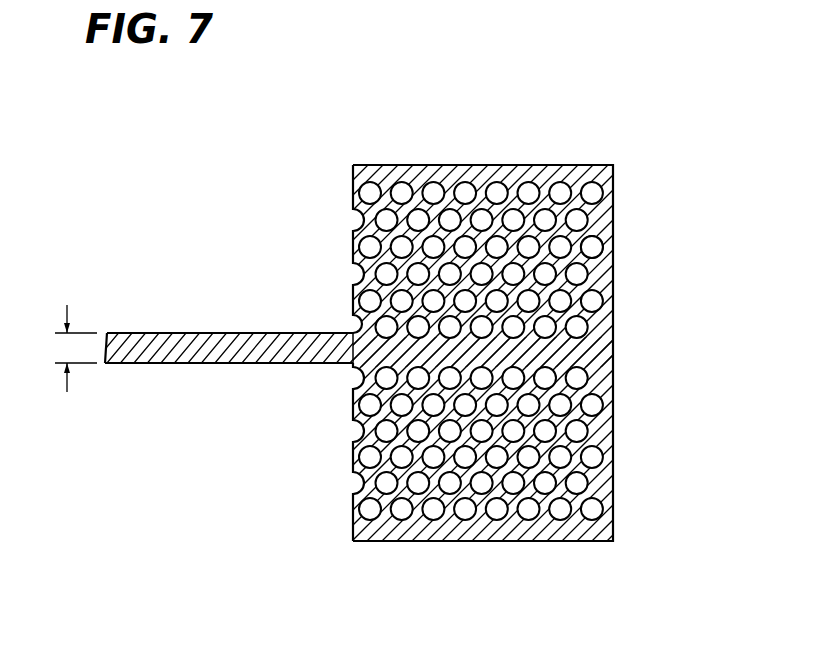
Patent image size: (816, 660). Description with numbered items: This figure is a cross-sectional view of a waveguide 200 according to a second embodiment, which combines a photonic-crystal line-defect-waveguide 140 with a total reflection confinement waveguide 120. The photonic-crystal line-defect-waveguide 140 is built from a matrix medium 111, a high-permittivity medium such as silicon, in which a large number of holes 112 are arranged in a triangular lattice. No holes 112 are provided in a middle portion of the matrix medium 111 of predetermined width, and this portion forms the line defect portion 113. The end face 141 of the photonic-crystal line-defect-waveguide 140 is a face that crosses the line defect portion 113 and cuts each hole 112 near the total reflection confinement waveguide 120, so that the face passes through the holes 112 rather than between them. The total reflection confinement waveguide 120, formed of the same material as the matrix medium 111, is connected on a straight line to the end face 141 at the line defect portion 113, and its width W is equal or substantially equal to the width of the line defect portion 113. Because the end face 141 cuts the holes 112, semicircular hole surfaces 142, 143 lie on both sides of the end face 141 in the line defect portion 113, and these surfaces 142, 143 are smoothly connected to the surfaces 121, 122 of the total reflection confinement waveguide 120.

The matrix medium 111 is at (421, 178).
The hole 112 is at (593, 247).
The line defect portion 113 is at (527, 356).
The total reflection confinement waveguide 120 is at (212, 348).
The surface 121 is at (140, 333).
The surface 122 is at (137, 363).
The photonic-crystal line-defect-waveguide 140 is at (482, 549).
The end face 141 is at (353, 352).
The surface 142 is at (357, 327).
The surface 143 is at (355, 366).
The waveguide 200 is at (622, 308).